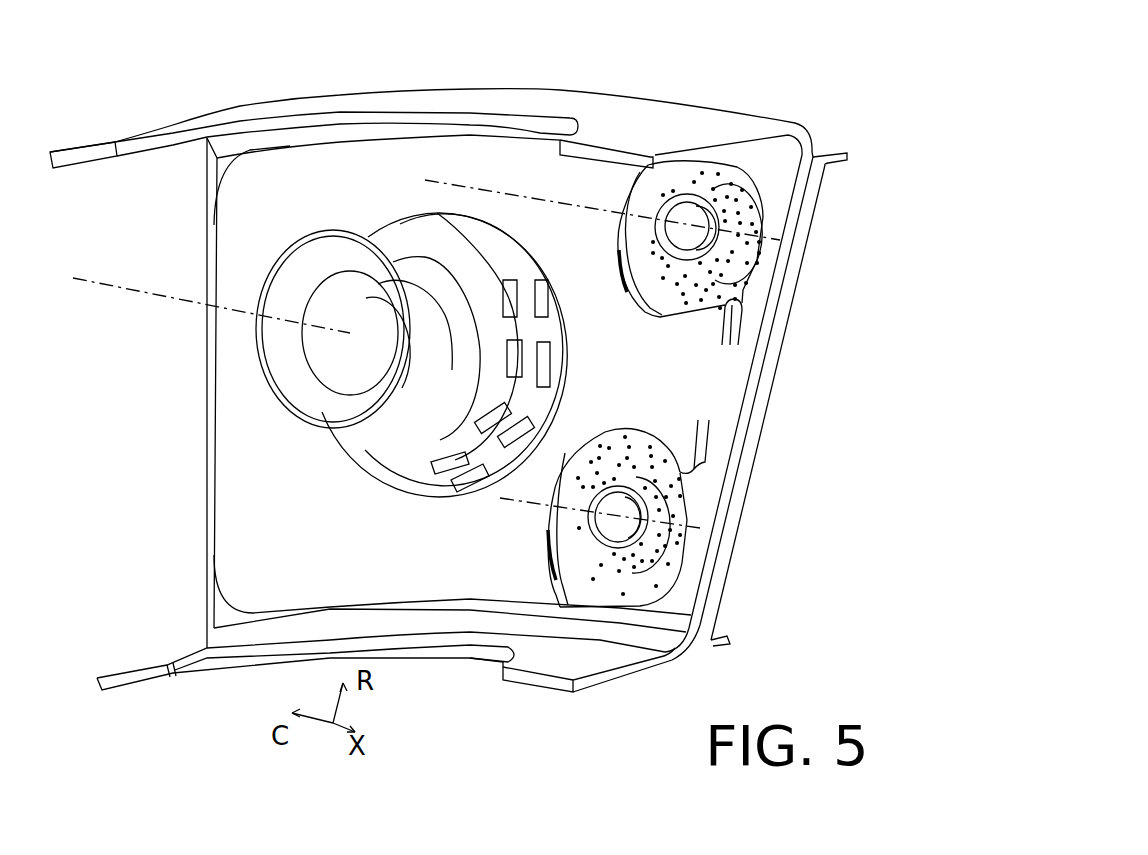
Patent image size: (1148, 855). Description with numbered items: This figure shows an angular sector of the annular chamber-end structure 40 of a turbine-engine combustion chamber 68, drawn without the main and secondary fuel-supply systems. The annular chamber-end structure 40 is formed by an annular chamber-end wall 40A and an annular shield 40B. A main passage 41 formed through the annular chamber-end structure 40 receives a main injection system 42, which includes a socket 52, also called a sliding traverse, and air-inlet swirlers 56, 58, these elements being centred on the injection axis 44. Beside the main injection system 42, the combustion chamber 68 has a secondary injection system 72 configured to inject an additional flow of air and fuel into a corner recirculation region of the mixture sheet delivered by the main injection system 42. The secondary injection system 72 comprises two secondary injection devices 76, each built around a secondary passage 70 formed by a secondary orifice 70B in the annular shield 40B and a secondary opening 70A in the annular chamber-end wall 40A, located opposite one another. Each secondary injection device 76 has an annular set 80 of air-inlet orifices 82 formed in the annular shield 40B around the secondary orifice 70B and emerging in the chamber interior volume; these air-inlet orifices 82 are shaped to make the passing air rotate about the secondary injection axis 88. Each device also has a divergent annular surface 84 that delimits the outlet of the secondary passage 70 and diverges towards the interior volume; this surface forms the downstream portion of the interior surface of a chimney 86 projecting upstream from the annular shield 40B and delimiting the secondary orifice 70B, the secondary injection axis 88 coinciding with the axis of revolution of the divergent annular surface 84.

The annular chamber-end structure 40 is at (474, 390).
The annular chamber-end wall 40A is at (687, 613).
The annular shield 40B is at (715, 600).
The main passage 41 is at (578, 350).
The main injection system 42 is at (325, 327).
The injection axis 44 is at (112, 287).
The socket 52 is at (310, 345).
The air-inlet swirler 56 is at (445, 470).
The air-inlet swirler 58 is at (467, 487).
The combustion chamber 68 is at (474, 355).
The secondary passage 70 is at (753, 162).
The secondary opening 70A is at (642, 185).
The secondary orifice 70B is at (779, 179).
The secondary injection system 72 is at (722, 393).
The secondary injection device 76 is at (779, 203).
The annular set of air-inlet orifices 80 is at (767, 203).
The air-inlet orifice 82 is at (725, 203).
The divergent annular surface 84 is at (720, 232).
The chimney 86 is at (743, 327).
The secondary injection axis 88 is at (466, 184).